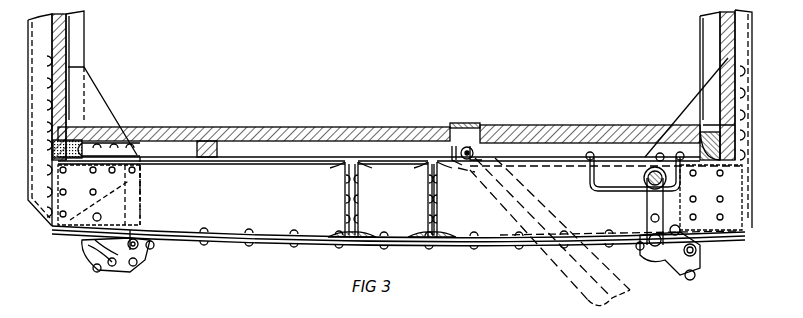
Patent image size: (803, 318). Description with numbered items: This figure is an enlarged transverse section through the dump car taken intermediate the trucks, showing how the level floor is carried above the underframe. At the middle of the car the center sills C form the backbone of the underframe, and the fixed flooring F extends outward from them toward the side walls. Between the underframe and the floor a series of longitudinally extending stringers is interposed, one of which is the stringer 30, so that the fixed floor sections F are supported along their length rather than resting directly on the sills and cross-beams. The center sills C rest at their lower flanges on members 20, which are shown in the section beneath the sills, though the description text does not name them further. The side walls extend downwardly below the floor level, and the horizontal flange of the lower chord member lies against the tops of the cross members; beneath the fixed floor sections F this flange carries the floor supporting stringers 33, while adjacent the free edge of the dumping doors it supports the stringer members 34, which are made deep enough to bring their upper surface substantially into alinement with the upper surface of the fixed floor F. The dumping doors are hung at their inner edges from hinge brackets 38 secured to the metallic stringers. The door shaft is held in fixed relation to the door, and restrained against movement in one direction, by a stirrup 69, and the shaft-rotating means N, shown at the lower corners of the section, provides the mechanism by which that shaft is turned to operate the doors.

The floor supporting stringer 33 is at (91, 137).
The stringer member 34 is at (712, 140).
The fixed flooring F is at (268, 140).
The stringer 30 is at (210, 158).
The center sill C is at (366, 201).
The channel flange 20 is at (353, 241).
The hinge bracket 38 is at (462, 166).
The stirrup 69 is at (626, 190).
The shaft-rotating means N is at (138, 253).